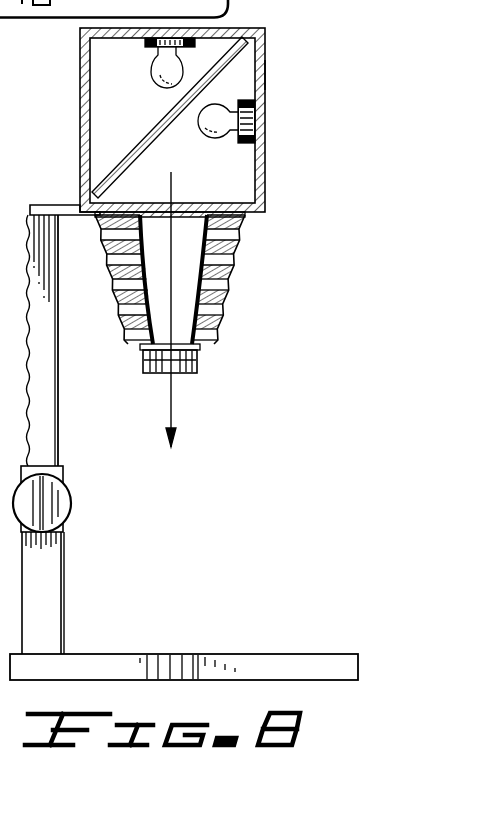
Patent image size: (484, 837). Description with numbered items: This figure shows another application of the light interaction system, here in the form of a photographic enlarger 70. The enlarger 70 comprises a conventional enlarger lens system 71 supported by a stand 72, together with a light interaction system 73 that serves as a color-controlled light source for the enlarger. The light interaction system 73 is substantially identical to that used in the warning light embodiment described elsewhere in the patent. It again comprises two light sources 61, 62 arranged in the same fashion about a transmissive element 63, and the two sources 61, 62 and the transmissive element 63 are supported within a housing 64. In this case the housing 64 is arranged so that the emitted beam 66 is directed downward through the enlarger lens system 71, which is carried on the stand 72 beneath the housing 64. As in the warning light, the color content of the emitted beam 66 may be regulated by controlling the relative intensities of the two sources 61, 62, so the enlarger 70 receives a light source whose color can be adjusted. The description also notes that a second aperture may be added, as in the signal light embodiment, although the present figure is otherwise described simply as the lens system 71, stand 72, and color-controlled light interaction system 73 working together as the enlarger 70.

The light source 61 is at (151, 70).
The light source 62 is at (208, 140).
The transmissive element 63 is at (145, 138).
The housing 64 is at (267, 73).
The emitted beam 66 is at (172, 402).
The photographic enlarger 70 is at (290, 170).
The enlarger lens system 71 is at (225, 278).
The stand 72 is at (202, 654).
The light interaction system 73 is at (97, 122).